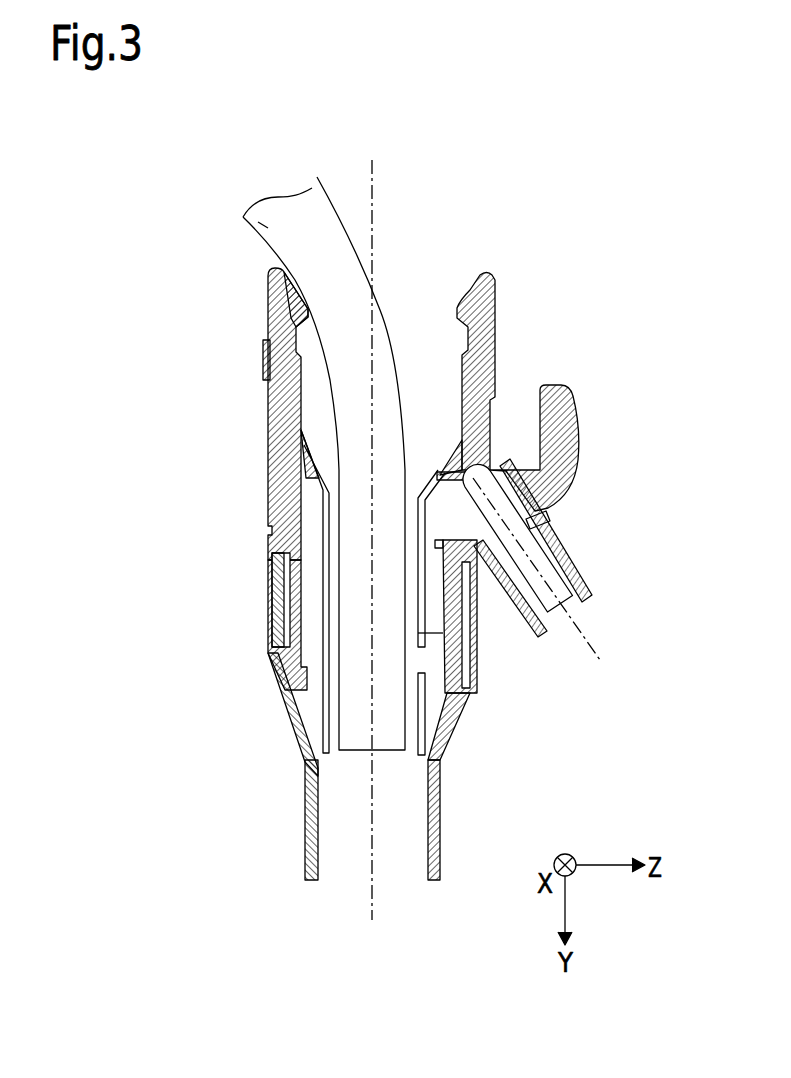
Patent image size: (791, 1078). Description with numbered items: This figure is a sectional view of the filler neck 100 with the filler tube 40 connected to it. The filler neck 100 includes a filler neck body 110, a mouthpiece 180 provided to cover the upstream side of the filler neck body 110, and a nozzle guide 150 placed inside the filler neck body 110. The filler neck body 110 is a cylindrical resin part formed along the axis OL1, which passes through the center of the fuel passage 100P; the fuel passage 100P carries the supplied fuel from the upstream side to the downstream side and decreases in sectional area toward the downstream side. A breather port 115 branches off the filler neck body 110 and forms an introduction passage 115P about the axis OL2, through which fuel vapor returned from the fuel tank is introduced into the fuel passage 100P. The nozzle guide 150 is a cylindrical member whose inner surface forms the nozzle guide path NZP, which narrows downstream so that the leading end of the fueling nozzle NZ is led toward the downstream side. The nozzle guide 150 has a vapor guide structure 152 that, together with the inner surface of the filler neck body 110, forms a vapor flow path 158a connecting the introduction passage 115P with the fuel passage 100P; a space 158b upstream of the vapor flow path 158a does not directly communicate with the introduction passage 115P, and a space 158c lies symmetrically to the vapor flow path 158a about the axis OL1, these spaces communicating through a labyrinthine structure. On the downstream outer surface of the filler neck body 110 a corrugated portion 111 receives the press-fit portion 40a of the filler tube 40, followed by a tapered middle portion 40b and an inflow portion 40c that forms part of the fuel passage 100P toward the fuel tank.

The filler tube 40 is at (83, 623).
The press-fit portion 40a is at (268, 612).
The middle portion 40b is at (287, 717).
The inflow portion 40c is at (305, 860).
The filler neck 100 is at (170, 378).
The fuel passage 100P is at (398, 234).
The filler neck body 110 is at (276, 444).
The corrugated portion 111 is at (272, 650).
The breather port 115 is at (556, 563).
The introduction passage 115P is at (566, 607).
The nozzle guide 150 is at (320, 507).
The vapor guide structure 152 is at (493, 457).
The vapor flow path 158a is at (476, 562).
The space 158b is at (495, 448).
The space 158c is at (307, 493).
The mouthpiece 180 is at (265, 373).
The fueling nozzle NZ is at (251, 210).
The nozzle guide path NZP is at (419, 432).
The axis OL1 is at (372, 523).
The axis OL2 is at (553, 589).